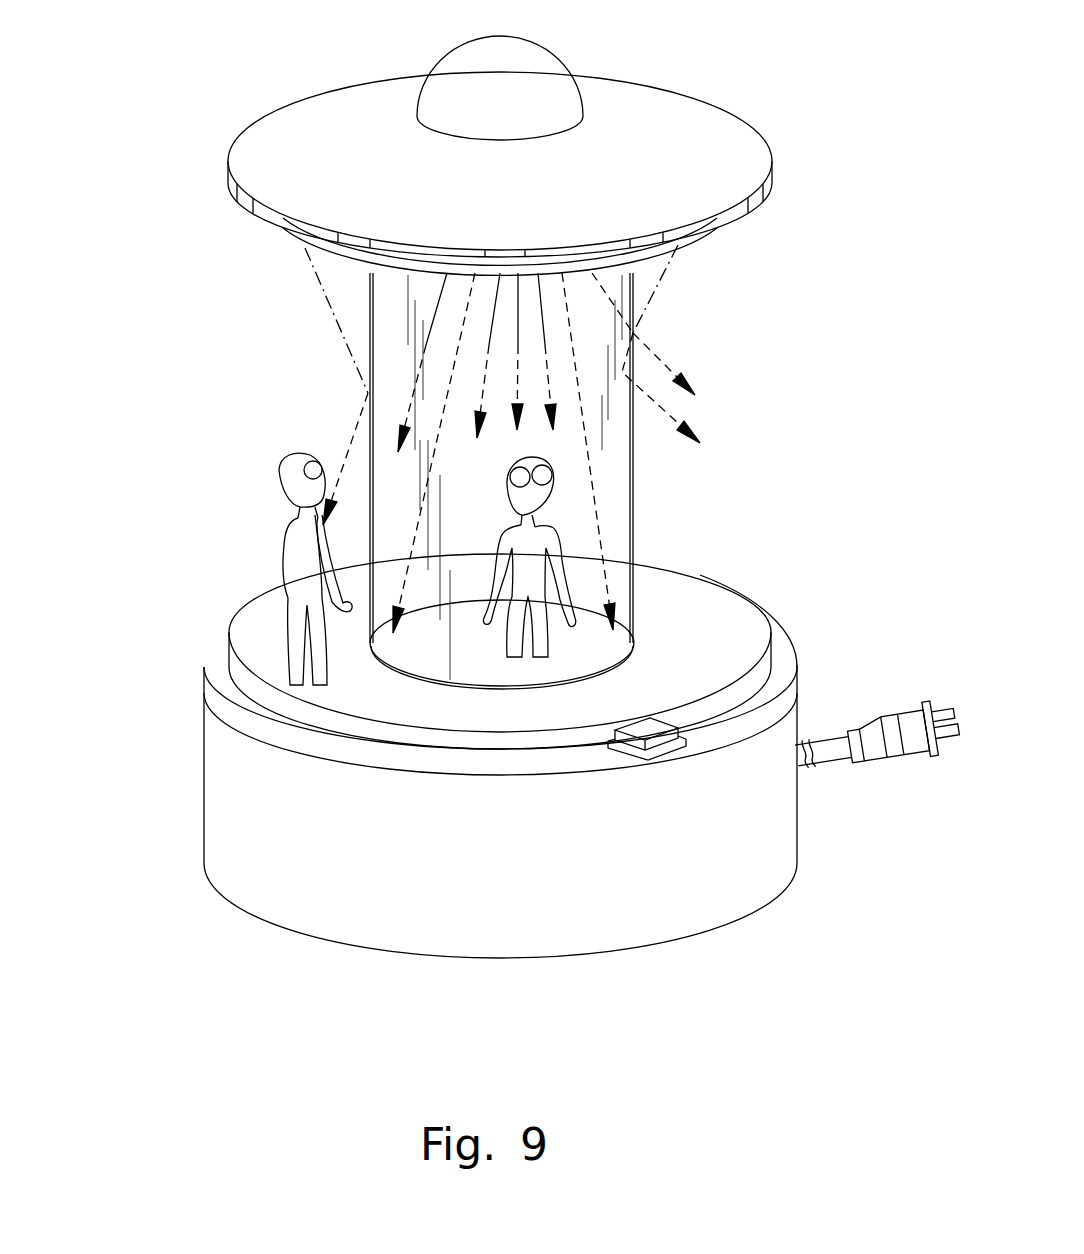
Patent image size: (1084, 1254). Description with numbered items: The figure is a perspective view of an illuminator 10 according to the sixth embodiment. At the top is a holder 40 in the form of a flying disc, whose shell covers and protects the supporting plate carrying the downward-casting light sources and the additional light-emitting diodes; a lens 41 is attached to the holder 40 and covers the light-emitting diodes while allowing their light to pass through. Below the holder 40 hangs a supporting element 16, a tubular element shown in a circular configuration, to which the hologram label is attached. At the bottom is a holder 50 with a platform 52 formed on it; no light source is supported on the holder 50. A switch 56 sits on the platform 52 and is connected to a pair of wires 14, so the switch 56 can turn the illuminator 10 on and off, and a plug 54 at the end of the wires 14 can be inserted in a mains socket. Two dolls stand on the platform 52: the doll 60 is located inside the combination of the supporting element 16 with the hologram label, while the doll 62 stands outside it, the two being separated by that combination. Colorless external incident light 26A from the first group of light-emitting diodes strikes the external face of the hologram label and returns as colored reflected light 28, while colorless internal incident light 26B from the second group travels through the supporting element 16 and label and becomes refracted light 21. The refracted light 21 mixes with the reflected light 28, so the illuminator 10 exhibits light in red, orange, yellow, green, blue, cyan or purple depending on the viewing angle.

The illuminator 10 is at (262, 62).
The holder 40 is at (675, 126).
The lens 41 is at (233, 190).
The supporting element 16 is at (632, 587).
The refracted light 21 is at (667, 420).
The reflected light 28 is at (657, 357).
The external incident light 26A is at (663, 273).
The internal incident light 26B is at (417, 513).
The doll 60 is at (533, 558).
The doll 62 is at (293, 530).
The platform 52 is at (255, 647).
The holder 50 is at (384, 899).
The switch 56 is at (658, 742).
The pair of wires 14 is at (840, 752).
The plug 54 is at (915, 748).